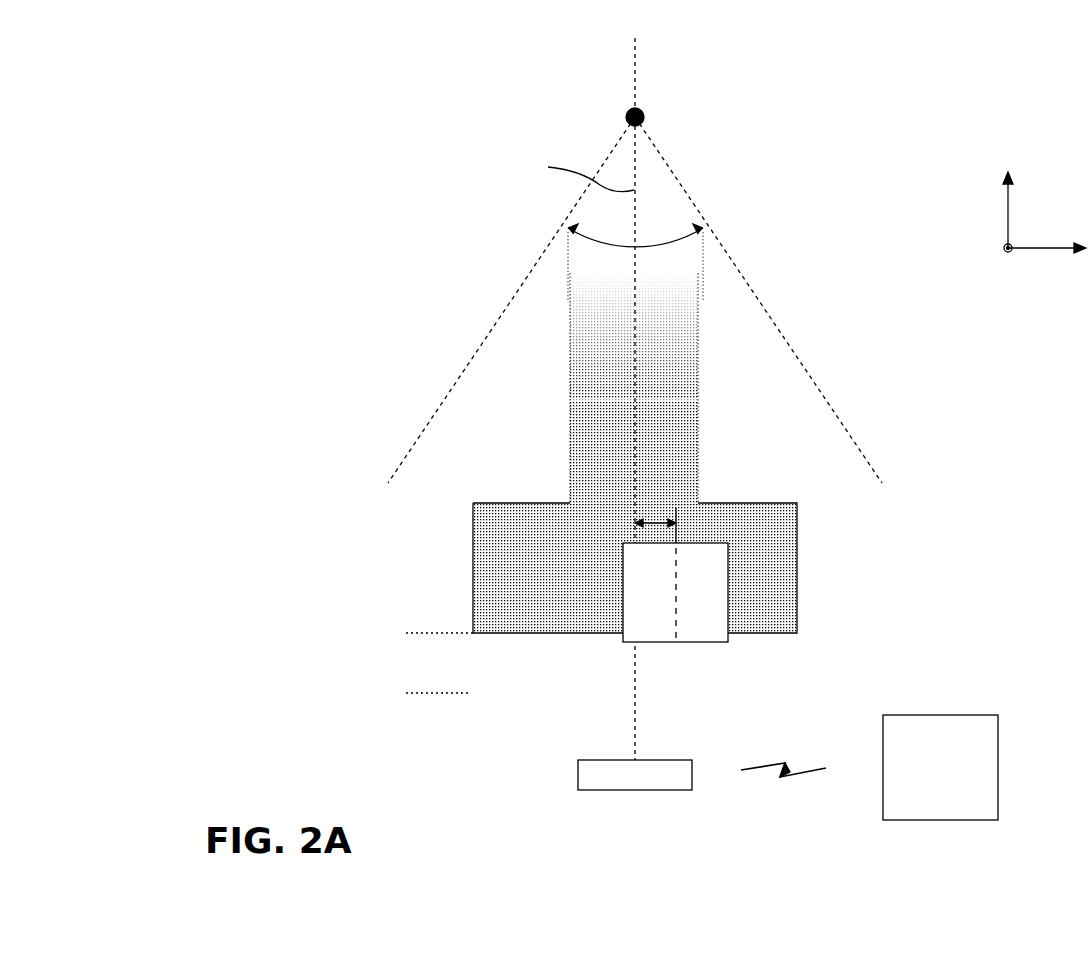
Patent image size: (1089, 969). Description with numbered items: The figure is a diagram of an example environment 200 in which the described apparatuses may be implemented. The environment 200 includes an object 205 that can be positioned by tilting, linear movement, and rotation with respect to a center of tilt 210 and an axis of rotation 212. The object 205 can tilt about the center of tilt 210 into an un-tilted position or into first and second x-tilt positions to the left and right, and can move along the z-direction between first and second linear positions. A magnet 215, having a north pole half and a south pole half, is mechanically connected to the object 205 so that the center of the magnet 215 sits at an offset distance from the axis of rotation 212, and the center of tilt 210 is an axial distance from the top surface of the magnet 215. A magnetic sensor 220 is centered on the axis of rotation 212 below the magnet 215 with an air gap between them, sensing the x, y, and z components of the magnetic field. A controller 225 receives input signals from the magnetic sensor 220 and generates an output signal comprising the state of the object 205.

The environment 200 is at (198, 62).
The object 205 is at (635, 453).
The center of tilt 210 is at (644, 117).
The axis of rotation 212 is at (634, 64).
The magnet 215 is at (690, 623).
The magnetic sensor 220 is at (586, 803).
The controller 225 is at (940, 767).